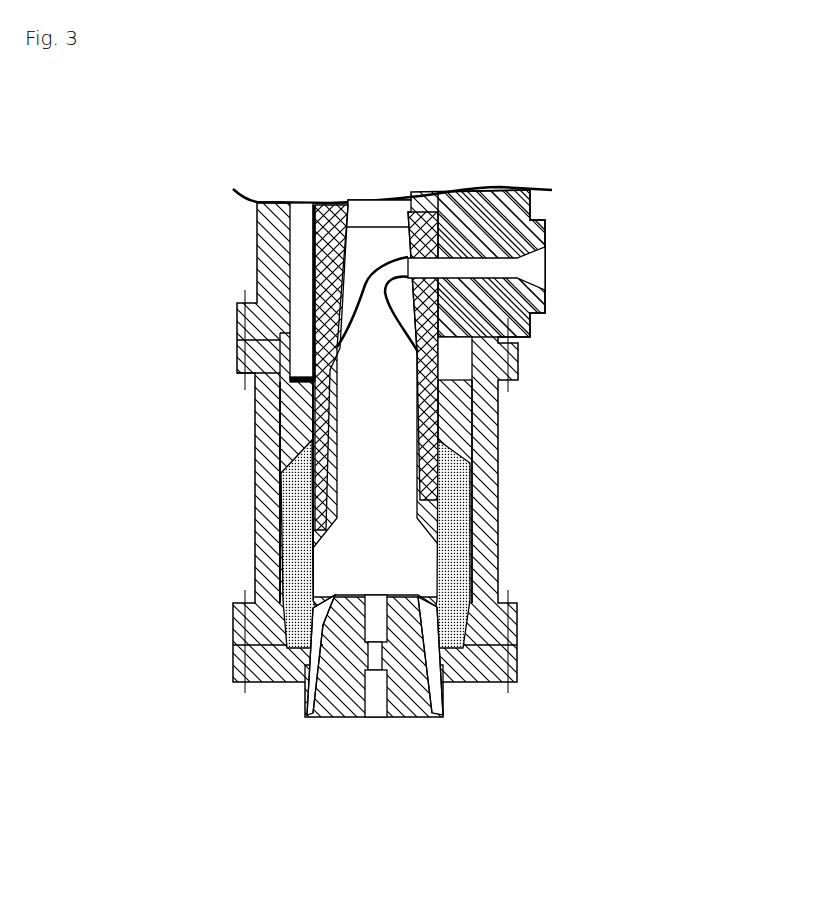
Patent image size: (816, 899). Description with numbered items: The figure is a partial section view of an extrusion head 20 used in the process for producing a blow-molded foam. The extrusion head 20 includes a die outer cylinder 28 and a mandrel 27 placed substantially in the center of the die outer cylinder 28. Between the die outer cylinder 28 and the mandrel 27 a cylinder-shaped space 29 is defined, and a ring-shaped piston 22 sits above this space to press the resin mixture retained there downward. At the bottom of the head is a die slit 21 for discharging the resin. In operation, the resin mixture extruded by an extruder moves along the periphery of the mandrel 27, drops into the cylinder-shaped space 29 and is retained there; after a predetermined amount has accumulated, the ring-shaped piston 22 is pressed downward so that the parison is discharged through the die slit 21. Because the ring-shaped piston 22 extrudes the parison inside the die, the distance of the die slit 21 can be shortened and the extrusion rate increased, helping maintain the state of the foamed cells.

The extrusion head 20 is at (423, 132).
The die slit 21 is at (443, 698).
The ring-shaped piston 22 is at (310, 412).
The mandrel 27 is at (387, 428).
The die outer cylinder 28 is at (257, 516).
The cylinder-shaped space 29 is at (437, 518).